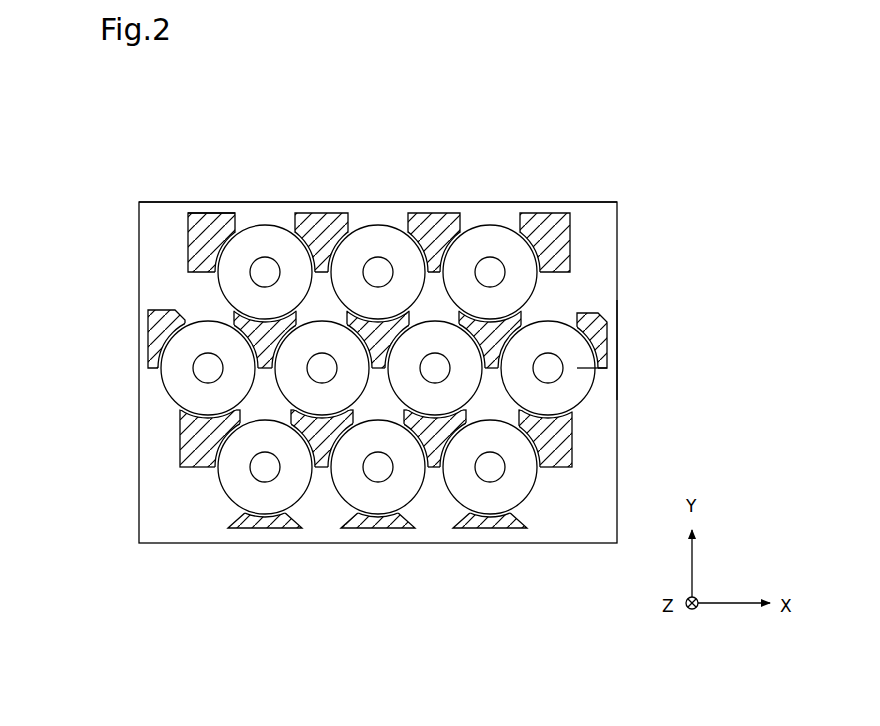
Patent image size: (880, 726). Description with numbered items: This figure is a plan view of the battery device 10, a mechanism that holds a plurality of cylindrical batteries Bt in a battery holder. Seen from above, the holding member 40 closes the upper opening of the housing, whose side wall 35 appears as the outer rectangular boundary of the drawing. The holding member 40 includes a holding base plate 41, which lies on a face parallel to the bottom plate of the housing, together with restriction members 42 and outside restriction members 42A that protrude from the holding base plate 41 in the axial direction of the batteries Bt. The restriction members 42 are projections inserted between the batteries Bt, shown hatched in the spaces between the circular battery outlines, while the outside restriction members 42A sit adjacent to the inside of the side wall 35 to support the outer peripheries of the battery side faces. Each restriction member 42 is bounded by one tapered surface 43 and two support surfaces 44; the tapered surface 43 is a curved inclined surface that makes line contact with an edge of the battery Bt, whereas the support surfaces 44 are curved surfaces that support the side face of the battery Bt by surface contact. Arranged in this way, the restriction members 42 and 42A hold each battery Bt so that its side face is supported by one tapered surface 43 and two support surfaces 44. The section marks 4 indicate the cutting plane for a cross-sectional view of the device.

The battery device 10 is at (512, 175).
The holding member 40 is at (418, 143).
The holding base plate 41 is at (413, 203).
The restriction member 42 is at (318, 247).
The outside restriction member 42A is at (218, 212).
The tapered surface 43 is at (227, 297).
The support surface 44 is at (222, 278).
The side wall 35 is at (618, 318).
The battery Bt is at (603, 368).
The section line 4- 4 is at (133, 196).